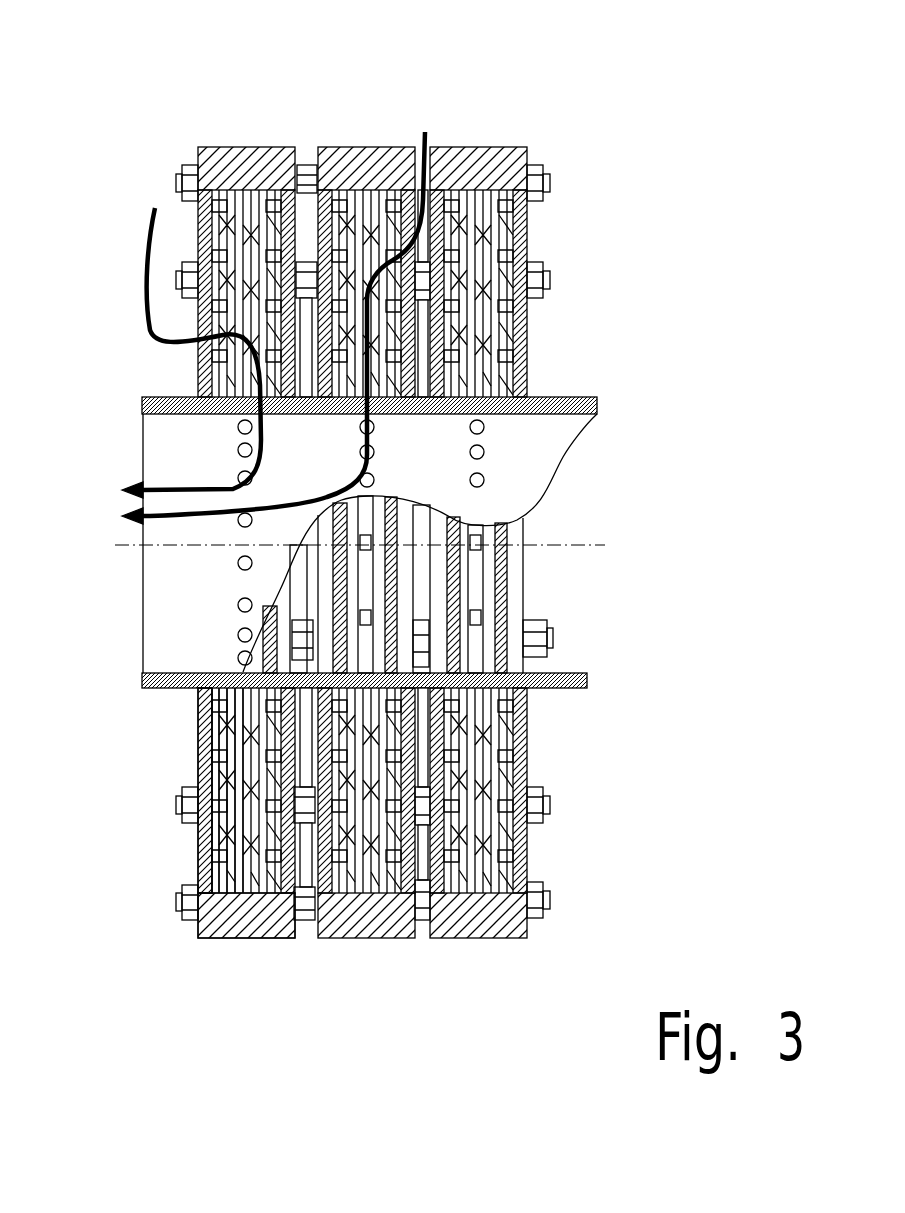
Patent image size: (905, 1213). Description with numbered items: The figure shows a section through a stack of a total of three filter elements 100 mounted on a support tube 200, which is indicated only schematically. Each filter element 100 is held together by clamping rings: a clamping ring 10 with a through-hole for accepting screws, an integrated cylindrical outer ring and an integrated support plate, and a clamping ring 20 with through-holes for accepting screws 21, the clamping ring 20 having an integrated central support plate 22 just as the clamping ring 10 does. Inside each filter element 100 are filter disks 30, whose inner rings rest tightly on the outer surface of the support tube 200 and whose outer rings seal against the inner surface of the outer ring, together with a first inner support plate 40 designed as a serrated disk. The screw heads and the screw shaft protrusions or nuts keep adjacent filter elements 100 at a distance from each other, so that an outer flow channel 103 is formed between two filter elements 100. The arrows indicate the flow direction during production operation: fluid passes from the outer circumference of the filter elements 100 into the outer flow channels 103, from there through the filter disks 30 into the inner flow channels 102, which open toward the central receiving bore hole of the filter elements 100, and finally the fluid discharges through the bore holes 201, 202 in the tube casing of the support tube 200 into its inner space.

The filter element 100 is at (362, 203).
The outer flow channel 103 is at (302, 210).
The support tube 200 is at (140, 410).
The bore hole 201 is at (238, 450).
The bore hole 202 is at (238, 562).
The central support plate 22 is at (200, 718).
The filter disk 30 is at (215, 745).
The first inner support plate 40 is at (230, 800).
The clamping ring 20 is at (210, 853).
The screw 21 is at (195, 890).
The inner flow channel 102 is at (243, 930).
The clamping ring 10 is at (295, 913).